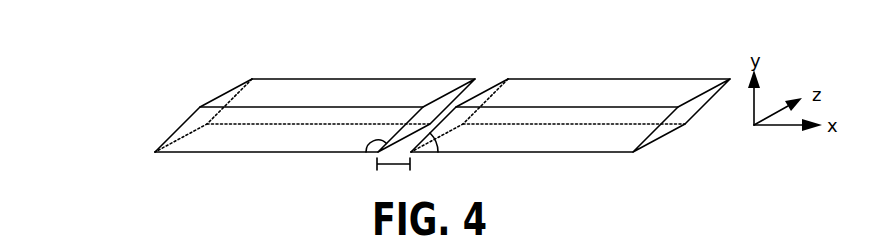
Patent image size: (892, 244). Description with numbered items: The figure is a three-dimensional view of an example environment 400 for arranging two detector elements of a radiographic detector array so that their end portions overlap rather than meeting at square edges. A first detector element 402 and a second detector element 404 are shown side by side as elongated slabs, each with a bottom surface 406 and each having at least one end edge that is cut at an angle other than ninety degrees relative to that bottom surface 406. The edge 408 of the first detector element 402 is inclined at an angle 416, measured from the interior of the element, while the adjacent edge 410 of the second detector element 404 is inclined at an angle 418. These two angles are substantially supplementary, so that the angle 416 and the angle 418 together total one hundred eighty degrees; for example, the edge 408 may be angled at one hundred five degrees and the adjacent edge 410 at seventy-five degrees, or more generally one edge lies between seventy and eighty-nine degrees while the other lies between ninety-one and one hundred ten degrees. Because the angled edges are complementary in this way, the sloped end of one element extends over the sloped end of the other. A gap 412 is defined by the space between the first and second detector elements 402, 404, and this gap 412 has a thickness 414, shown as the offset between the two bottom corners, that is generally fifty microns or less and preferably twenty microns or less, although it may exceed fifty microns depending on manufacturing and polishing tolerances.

The example environment 400 is at (150, 82).
The first detector element 402 is at (341, 79).
The second detector element 404 is at (598, 79).
The bottom surface 406 is at (295, 165).
The edge 408 is at (432, 108).
The adjacent edge 410 is at (477, 102).
The gap 412 is at (482, 62).
The thickness 414 is at (400, 164).
The angle 416 is at (370, 147).
The angle 418 is at (440, 141).